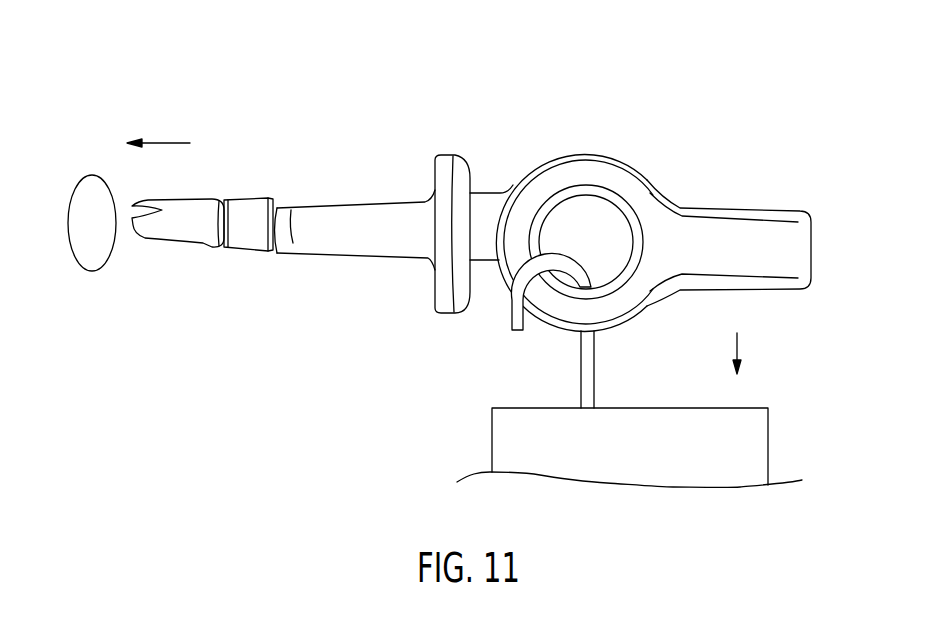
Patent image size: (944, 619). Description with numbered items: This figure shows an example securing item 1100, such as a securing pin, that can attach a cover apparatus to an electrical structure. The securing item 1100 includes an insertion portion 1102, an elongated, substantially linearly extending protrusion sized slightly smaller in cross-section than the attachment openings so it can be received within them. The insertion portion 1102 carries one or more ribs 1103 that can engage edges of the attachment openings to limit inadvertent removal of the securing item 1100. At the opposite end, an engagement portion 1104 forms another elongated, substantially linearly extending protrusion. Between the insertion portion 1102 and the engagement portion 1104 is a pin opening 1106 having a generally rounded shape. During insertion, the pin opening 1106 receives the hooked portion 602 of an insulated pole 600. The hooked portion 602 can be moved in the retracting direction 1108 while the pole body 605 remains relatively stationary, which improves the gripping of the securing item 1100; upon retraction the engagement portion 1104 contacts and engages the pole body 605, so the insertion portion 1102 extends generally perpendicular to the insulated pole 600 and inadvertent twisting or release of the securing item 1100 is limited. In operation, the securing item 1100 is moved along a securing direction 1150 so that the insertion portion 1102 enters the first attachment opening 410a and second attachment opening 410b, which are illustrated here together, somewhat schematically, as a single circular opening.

The securing item 1100 is at (345, 86).
The securing direction 1150 is at (171, 143).
The first attachment opening 410a is at (92, 175).
The second attachment opening 410b is at (92, 223).
The rib 1103 is at (252, 202).
The insertion portion 1102 is at (350, 255).
The pin opening 1106 is at (594, 194).
The engagement portion 1104 is at (780, 210).
The retracting direction 1108 is at (737, 343).
The insulated pole 600 is at (413, 424).
The hooked portion 602 is at (595, 372).
The pole body 605 is at (768, 448).